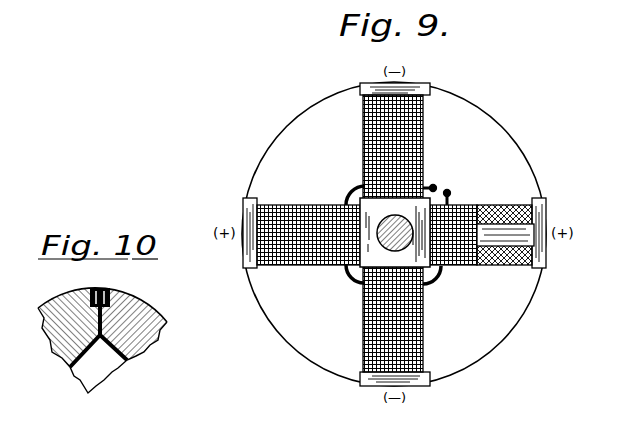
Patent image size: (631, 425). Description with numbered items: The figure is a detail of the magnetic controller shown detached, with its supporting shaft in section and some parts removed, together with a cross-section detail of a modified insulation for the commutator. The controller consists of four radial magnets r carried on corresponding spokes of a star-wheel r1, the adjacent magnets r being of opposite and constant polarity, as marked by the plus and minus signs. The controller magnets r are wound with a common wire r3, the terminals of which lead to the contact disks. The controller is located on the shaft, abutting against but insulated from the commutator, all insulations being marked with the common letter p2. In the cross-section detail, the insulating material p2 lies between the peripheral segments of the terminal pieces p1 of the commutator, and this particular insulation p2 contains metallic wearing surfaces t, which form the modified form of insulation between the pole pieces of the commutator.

In FIG. 10, the terminal pieces p1 is at (155, 312).
In FIG. 9, the insulating material p2 is at (525, 165).
In FIG. 10, the insulating material p2 is at (52, 302).
In FIG. 9, the radial magnets r is at (316, 190).
In FIG. 9, the star-wheel r1 is at (418, 263).
In FIG. 9, the common wire r3 is at (447, 191).
In FIG. 10, the metallic wearing surfaces t is at (95, 288).